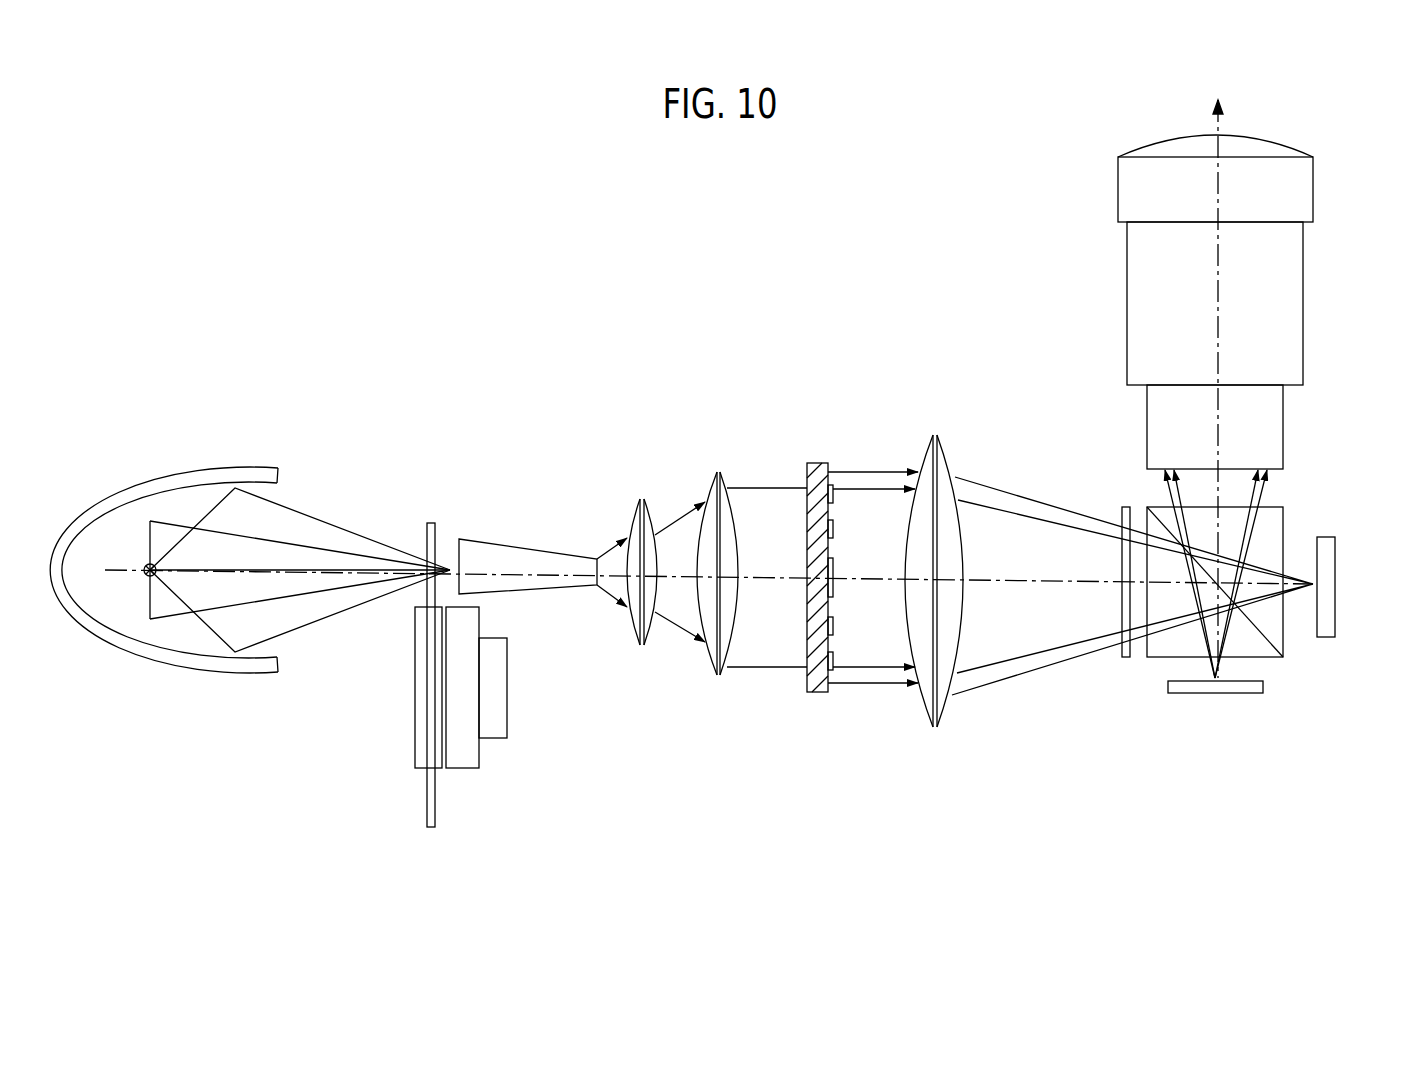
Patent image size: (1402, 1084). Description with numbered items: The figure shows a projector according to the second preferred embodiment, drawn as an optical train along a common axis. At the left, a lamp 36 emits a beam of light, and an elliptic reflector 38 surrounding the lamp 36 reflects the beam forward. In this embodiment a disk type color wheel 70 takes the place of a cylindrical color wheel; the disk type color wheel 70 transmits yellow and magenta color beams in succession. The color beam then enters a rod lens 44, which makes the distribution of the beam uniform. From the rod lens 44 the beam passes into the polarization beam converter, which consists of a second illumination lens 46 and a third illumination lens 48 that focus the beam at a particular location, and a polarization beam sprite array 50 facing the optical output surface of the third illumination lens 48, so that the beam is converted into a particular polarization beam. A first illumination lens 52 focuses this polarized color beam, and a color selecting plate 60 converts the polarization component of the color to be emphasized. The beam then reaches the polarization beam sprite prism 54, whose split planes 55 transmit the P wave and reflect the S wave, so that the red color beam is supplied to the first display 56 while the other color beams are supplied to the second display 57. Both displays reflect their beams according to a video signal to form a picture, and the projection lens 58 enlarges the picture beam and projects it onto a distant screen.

The lamp 36 is at (143, 573).
The elliptic reflector 38 is at (170, 497).
The rod lens 44 is at (513, 538).
The second illumination lens 46 is at (643, 646).
The third illumination lens 48 is at (718, 676).
The polarization beam sprite array 50 is at (813, 692).
The first illumination lens 52 is at (935, 728).
The polarization beam sprite prism 54 is at (1158, 659).
The split planes 55 is at (1268, 650).
The first display 56 is at (1330, 548).
The second display 57 is at (1225, 695).
The projection lens 58 is at (1293, 303).
The color selecting plate 60 is at (1125, 659).
The disk type color wheel 70 is at (465, 769).